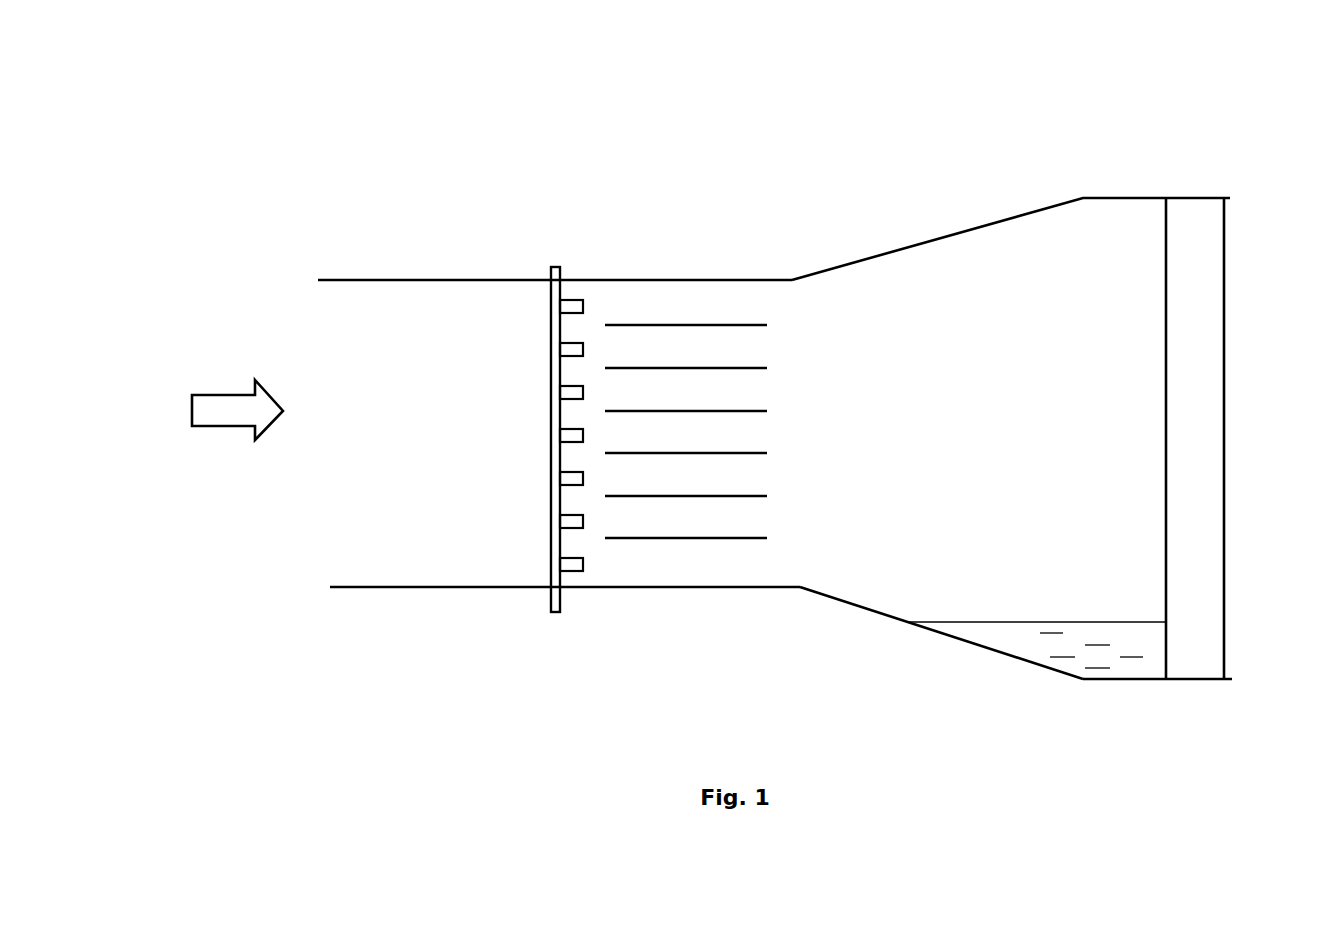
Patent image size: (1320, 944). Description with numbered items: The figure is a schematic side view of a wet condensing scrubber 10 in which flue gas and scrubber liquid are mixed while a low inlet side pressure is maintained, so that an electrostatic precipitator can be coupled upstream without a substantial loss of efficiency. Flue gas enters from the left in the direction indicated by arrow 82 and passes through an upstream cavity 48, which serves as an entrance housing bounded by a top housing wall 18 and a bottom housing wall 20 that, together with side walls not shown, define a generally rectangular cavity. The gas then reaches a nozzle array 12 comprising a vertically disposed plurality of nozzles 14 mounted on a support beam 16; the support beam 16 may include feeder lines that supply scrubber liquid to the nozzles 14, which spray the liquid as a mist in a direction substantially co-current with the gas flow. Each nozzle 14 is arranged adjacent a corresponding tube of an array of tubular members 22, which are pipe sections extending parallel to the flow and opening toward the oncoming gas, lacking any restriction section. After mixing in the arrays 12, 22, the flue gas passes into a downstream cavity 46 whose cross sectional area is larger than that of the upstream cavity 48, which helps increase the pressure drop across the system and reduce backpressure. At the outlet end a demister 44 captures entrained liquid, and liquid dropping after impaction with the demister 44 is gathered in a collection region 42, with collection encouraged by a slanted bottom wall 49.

The wet condensing scrubber 10 is at (372, 86).
The nozzle array 12 is at (556, 417).
The nozzles 14 is at (580, 345).
The support beam 16 is at (551, 412).
The top housing wall 18 is at (388, 281).
The bottom housing wall 20 is at (417, 590).
The array of tubular members 22 is at (743, 368).
The liquid collection region 42 is at (1130, 668).
The demister 44 is at (1188, 197).
The downstream cavity 46 is at (1022, 431).
The upstream cavity 48 is at (367, 442).
The slanted bottom wall 49 is at (867, 612).
The arrow 82 is at (222, 427).